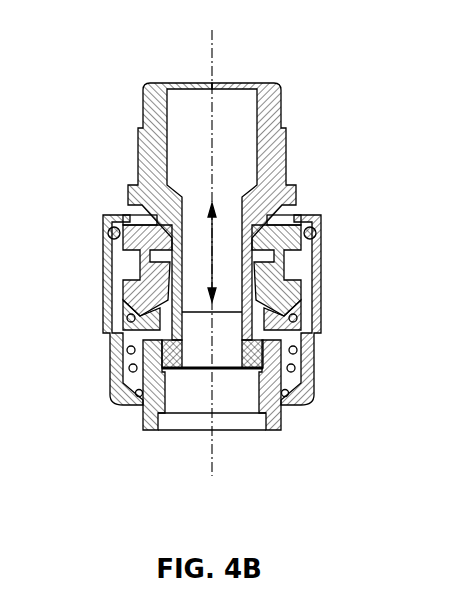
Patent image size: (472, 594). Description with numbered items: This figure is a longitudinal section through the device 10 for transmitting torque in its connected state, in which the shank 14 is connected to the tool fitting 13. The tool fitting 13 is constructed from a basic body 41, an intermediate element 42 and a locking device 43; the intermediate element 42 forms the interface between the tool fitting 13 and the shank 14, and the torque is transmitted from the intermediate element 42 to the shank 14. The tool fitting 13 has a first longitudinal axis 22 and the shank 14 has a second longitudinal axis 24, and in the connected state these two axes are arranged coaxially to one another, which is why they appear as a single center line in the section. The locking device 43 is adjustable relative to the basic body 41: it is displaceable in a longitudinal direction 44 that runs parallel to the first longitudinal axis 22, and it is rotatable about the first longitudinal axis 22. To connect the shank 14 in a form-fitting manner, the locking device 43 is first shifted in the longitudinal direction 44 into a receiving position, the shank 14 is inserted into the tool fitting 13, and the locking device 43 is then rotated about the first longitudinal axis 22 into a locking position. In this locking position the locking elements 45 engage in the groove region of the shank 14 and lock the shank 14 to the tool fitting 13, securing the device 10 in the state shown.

The device for transmitting torque 10 is at (181, 61).
The tool fitting 13 is at (265, 450).
The shank 14 is at (152, 143).
The first longitudinal axis 22 is at (212, 460).
The second longitudinal axis 24 is at (214, 53).
The basic body 41 is at (283, 352).
The intermediate element 42 is at (298, 227).
The locking device 43 is at (98, 346).
The longitudinal direction 44 is at (223, 252).
The locking elements 45 is at (125, 307).